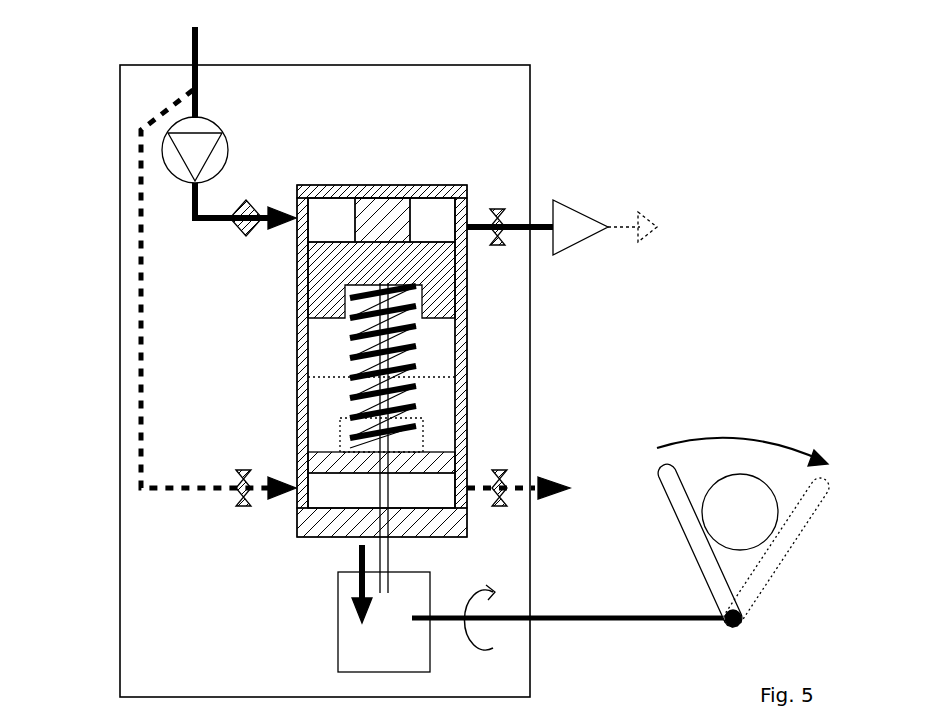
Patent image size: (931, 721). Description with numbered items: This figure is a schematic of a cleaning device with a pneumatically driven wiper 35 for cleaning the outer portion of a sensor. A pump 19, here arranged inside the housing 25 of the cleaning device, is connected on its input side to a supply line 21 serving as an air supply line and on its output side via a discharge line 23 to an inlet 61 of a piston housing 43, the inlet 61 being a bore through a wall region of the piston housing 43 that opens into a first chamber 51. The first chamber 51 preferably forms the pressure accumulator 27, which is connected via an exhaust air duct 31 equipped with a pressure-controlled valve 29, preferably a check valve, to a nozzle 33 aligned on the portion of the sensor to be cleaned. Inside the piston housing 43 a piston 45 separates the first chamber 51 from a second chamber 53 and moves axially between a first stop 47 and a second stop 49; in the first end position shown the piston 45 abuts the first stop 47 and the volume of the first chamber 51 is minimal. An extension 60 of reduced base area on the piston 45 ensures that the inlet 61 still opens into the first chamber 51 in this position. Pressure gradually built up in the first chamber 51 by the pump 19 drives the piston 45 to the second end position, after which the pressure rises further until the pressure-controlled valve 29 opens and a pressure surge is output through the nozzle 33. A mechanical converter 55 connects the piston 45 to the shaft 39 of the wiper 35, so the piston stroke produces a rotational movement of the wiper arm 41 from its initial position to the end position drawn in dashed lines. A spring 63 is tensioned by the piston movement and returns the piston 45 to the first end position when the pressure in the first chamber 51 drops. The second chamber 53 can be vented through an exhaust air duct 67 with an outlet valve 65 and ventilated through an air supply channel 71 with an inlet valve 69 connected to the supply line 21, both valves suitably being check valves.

The pump 19 is at (196, 148).
The supply line 21 is at (193, 45).
The discharge line 23 is at (218, 225).
The housing 25 is at (120, 330).
The pressure accumulator 27 is at (432, 220).
The pressure-controlled valve 29 is at (500, 230).
The exhaust air duct 31 is at (514, 224).
The nozzle 33 is at (572, 218).
The wiper 35 is at (795, 408).
The shaft 39 is at (622, 625).
The wiper arm 41 is at (700, 532).
The piston housing 43 is at (300, 385).
The piston 45 is at (450, 262).
The first stop 47 is at (378, 198).
The second stop 49 is at (330, 445).
The first chamber 51 is at (331, 220).
The second chamber 53 is at (322, 352).
The mechanical converter 55 is at (384, 608).
The extension 60 is at (386, 205).
The inlet 61 is at (294, 225).
The spring 63 is at (410, 360).
The outlet valve 65 is at (505, 472).
The exhaust air duct 67 is at (505, 495).
The inlet valve 69 is at (243, 505).
The air supply channel 71 is at (205, 490).